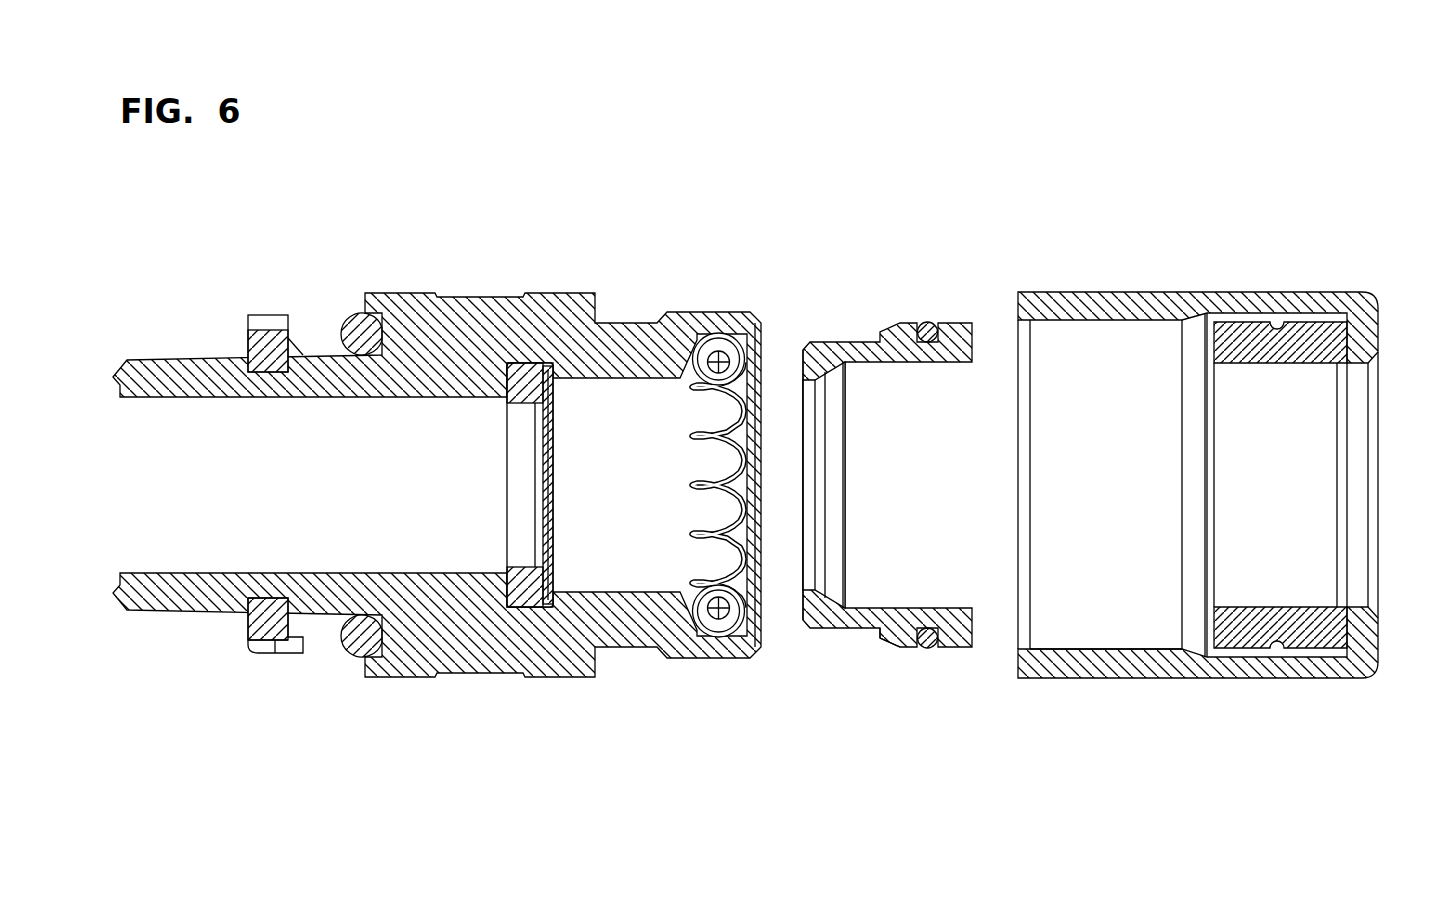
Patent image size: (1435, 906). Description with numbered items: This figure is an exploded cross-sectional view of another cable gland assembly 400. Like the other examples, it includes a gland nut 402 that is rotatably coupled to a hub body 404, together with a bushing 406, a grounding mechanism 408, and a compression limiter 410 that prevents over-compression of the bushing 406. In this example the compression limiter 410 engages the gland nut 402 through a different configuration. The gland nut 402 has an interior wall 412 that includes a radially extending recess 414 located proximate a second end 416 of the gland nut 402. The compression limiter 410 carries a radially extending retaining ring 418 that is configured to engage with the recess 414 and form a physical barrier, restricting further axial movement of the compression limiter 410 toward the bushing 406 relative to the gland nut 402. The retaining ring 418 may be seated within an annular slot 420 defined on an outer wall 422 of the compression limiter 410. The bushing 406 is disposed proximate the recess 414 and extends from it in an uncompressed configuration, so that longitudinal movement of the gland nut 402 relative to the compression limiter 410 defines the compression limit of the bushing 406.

The cable gland assembly 400 is at (1212, 157).
The gland nut 402 is at (1226, 505).
The hub body 404 is at (397, 293).
The bushing 406 is at (1233, 325).
The grounding mechanism 408 is at (697, 337).
The compression limiter 410 is at (869, 506).
The interior wall 412 is at (1060, 650).
The radially extending recess 414 is at (1220, 655).
The second end 416 is at (1370, 675).
The retaining ring 418 is at (928, 322).
The annular slot 420 is at (900, 662).
The outer wall 422 is at (836, 630).